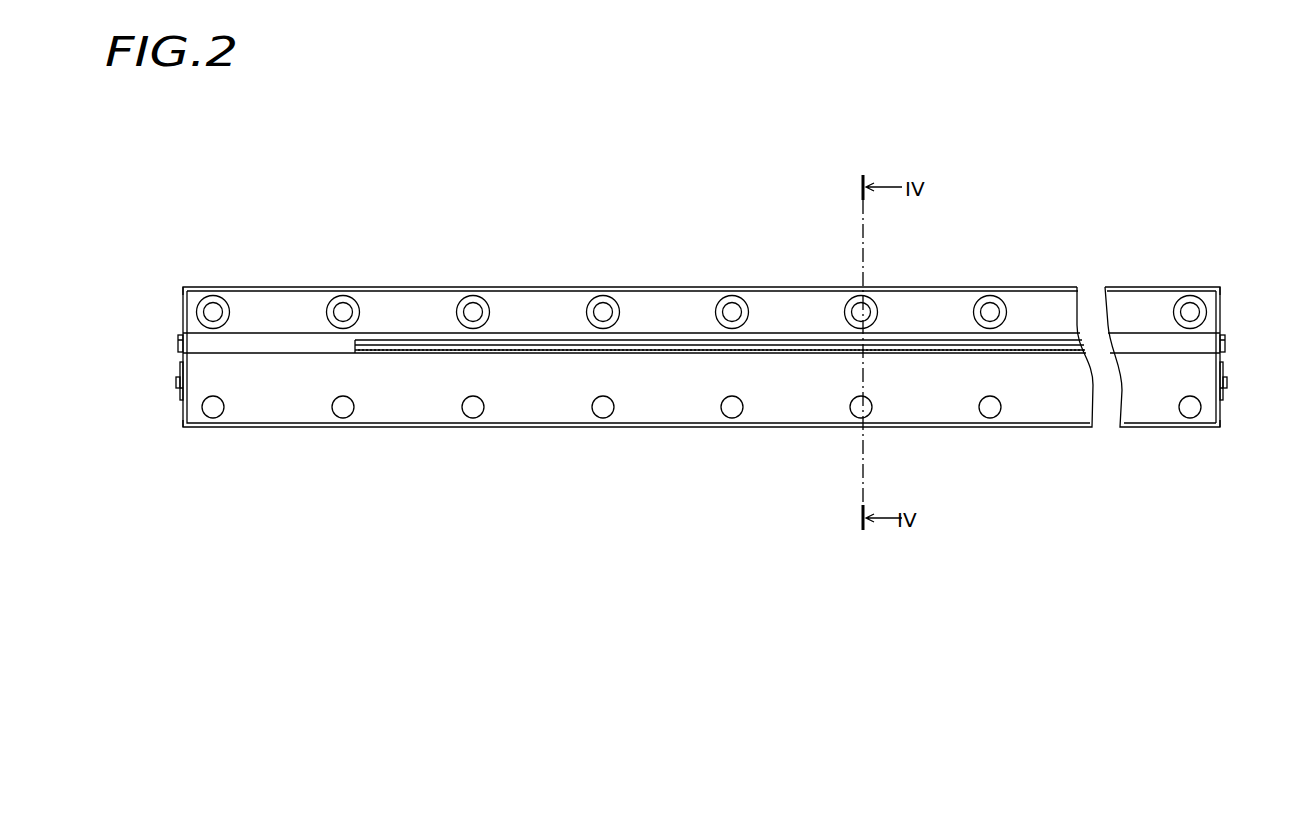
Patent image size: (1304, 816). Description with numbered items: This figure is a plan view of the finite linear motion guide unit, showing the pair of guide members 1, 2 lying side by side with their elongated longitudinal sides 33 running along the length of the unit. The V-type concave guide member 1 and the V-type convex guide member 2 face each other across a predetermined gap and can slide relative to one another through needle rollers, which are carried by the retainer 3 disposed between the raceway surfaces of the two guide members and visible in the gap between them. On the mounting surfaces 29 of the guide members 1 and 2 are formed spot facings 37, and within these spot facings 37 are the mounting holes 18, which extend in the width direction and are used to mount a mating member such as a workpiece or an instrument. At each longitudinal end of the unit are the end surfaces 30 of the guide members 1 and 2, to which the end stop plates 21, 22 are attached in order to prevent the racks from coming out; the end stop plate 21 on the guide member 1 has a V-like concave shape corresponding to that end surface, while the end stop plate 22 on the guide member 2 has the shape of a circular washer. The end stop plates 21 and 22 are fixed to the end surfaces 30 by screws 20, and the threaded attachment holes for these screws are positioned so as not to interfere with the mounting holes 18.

The V-type concave guide member 1 is at (403, 405).
The V-type convex guide member 2 is at (390, 287).
The retainer 3 is at (447, 350).
The mounting holes 18 is at (598, 307).
The screws 20 is at (178, 383).
The end stop plate 21 is at (178, 395).
The end stop plate 22 is at (178, 340).
The mounting surfaces 29 is at (925, 312).
The end surfaces 30 is at (183, 292).
The elongated longitudinal sides 33 is at (313, 287).
The spot facings 37 is at (723, 307).